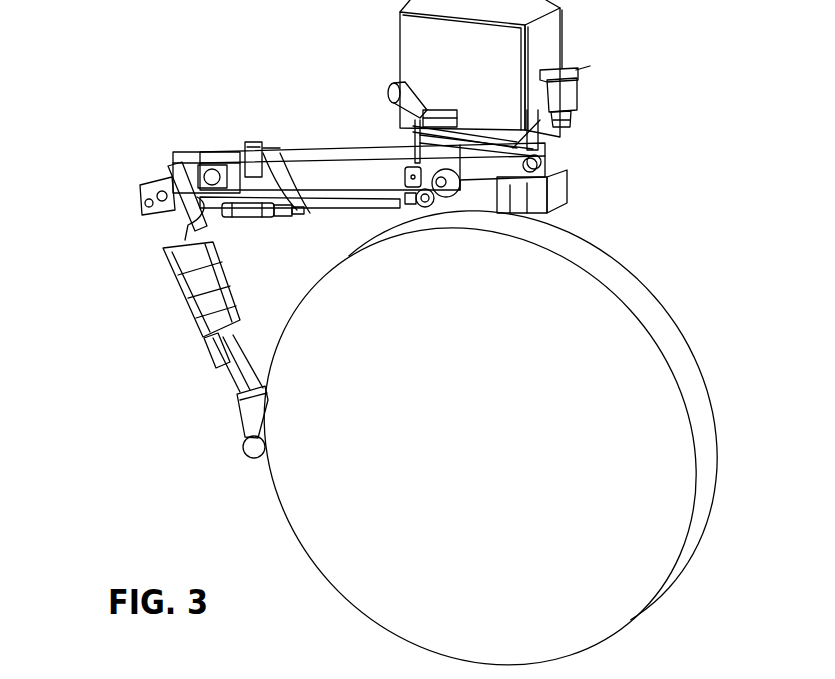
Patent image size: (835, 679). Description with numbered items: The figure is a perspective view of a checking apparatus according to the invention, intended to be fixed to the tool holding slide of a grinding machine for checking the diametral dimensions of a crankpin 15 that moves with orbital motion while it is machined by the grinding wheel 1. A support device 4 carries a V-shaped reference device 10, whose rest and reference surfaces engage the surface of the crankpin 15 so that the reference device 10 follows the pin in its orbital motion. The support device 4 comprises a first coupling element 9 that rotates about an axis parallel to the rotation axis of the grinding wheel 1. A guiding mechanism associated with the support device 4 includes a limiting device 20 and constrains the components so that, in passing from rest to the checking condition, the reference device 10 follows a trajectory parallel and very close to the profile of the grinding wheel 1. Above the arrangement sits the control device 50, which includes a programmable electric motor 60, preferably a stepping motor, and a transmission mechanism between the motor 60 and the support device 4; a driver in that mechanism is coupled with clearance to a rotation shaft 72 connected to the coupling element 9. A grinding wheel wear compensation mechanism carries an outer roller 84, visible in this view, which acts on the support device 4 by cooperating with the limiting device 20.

The grinding wheel 1 is at (553, 315).
The support device 4 is at (152, 233).
The first coupling element 9 is at (303, 175).
The reference device 10 is at (252, 421).
The crankpin 15 is at (253, 450).
The limiting device 20 is at (297, 236).
The control device 50 is at (370, 59).
The programmable electric motor 60 is at (480, 80).
The rotation shaft 72 is at (445, 185).
The outer roller 84 is at (412, 207).